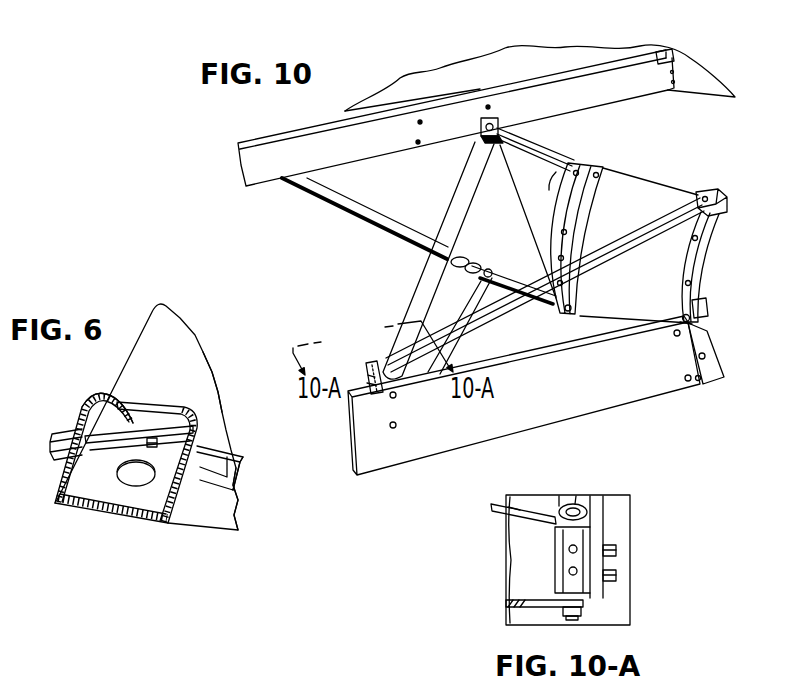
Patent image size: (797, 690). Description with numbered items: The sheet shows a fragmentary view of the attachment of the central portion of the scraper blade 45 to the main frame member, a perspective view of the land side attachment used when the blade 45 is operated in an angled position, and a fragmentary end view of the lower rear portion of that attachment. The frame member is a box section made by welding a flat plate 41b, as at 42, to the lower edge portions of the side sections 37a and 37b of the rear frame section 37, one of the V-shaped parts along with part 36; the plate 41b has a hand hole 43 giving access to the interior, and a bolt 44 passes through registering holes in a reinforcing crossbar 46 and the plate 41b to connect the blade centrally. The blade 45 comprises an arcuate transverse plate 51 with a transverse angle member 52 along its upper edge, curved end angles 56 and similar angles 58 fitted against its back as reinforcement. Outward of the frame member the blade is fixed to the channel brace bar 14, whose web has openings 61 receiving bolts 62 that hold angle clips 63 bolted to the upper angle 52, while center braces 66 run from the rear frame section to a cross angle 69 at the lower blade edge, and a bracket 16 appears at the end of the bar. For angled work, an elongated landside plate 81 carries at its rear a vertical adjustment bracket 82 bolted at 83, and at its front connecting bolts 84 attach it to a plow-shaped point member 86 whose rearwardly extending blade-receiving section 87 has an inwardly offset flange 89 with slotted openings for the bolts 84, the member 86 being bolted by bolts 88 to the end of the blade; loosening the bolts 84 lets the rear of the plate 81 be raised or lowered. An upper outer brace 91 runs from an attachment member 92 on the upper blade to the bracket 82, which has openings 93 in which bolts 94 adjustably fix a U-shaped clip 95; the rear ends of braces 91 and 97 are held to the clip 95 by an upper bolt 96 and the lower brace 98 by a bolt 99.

In FIG. 10, the frame brace bar 14 is at (263, 178).
In FIG. 10, the end bracket 16 is at (665, 55).
In FIG. 10, the V-shaped part 36 is at (509, 66).
In FIG. 6, the rear frame section 37 is at (205, 340).
In FIG. 6, the side section 37a is at (80, 426).
In FIG. 6, the side section 37b is at (208, 395).
In FIG. 6, the flat plate 41b is at (130, 512).
In FIG. 6, the weld 42 is at (58, 506).
In FIG. 6, the hand hole 43 is at (123, 481).
In FIG. 6, the bolt 44 is at (152, 438).
In FIG. 10, the scraper blade 45 is at (612, 163).
In FIG. 6, the scraper blade 45 is at (248, 487).
In FIG. 6, the crossbar 46 is at (119, 446).
In FIG. 10, the arcuate transverse plate 51 is at (551, 181).
In FIG. 6, the arcuate transverse plate 51 is at (226, 517).
In FIG. 10, the transverse angle member 52 is at (540, 152).
In FIG. 6, the transverse angle member 52 is at (220, 458).
In FIG. 10, the end angle 56 is at (700, 262).
In FIG. 10, the angle 58 is at (563, 213).
In FIG. 10, the opening 61 is at (486, 108).
In FIG. 10, the bolt 62 is at (499, 126).
In FIG. 10, the angle clip 63 is at (483, 137).
In FIG. 10, the center brace 66 is at (366, 212).
In FIG. 10, the cross angle 69 is at (512, 284).
In FIG. 10, the landside plate 81 is at (502, 430).
In FIG. 10a, the landside plate 81 is at (510, 581).
In FIG. 10, the adjustment bracket 82 is at (366, 364).
In FIG. 10a, the adjustment bracket 82 is at (597, 497).
In FIG. 10, the bolt 83 is at (405, 402).
In FIG. 10, the connecting bolt 84 is at (685, 376).
In FIG. 10, the point member 86 is at (711, 338).
In FIG. 10, the blade-receiving section 87 is at (683, 318).
In FIG. 10, the bolt 88 is at (707, 311).
In FIG. 10, the flange 89 is at (701, 381).
In FIG. 10, the upper outer brace 91 is at (618, 248).
In FIG. 10a, the upper outer brace 91 is at (492, 513).
In FIG. 10, the attachment member 92 is at (727, 205).
In FIG. 10, the opening 93 is at (367, 383).
In FIG. 10a, the bolt 94 is at (619, 576).
In FIG. 10a, the U-shaped clip 95 is at (556, 593).
In FIG. 10a, the upper bolt 96 is at (567, 508).
In FIG. 10, the brace 97 is at (458, 202).
In FIG. 10a, the brace 97 is at (557, 507).
In FIG. 10, the lower brace 98 is at (477, 300).
In FIG. 10a, the lower brace 98 is at (507, 607).
In FIG. 10a, the bolt 99 is at (580, 616).